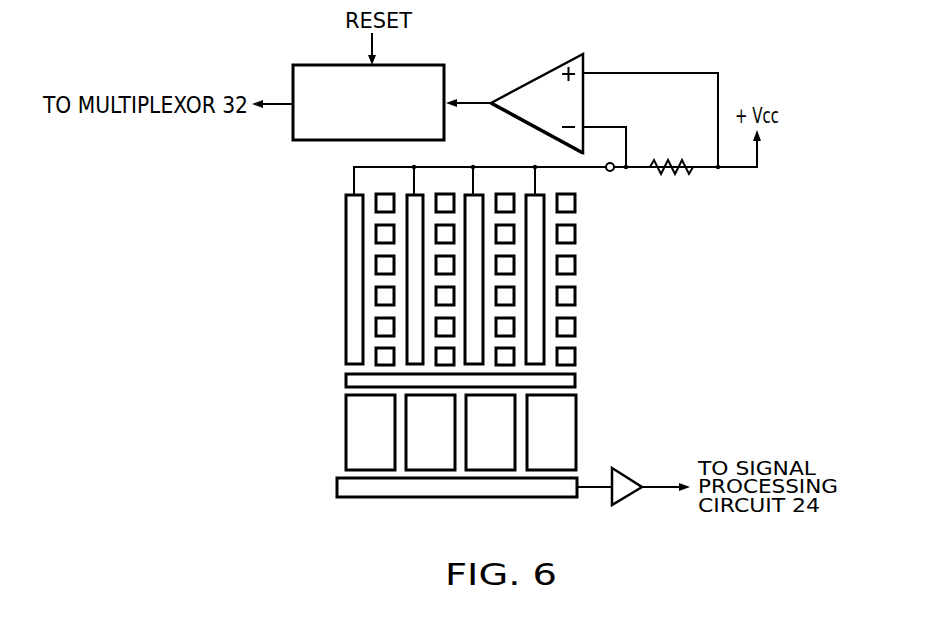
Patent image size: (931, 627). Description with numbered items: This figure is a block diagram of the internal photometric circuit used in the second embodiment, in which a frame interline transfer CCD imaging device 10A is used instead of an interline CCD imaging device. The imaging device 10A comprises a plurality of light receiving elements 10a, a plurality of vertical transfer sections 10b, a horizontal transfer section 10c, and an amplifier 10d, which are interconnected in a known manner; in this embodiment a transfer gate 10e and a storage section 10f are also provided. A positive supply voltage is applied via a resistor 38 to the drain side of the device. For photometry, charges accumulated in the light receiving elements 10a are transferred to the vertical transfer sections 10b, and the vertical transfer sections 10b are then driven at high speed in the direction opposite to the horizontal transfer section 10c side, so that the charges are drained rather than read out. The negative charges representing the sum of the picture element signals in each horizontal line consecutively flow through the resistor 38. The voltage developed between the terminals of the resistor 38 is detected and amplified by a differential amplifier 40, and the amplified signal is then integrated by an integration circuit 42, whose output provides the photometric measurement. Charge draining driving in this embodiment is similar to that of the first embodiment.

The integration circuit 42 is at (431, 64).
The differential amplifier 40 is at (531, 78).
The resistor 38 is at (670, 158).
The frame interline transfer CCD imaging device 10A is at (606, 250).
The light receiving elements 10a is at (376, 235).
The vertical transfer sections 10b is at (425, 316).
The transfer gate 10e is at (614, 172).
The storage section 10f is at (346, 430).
The horizontal transfer section 10c is at (498, 498).
The amplifier 10d is at (625, 475).